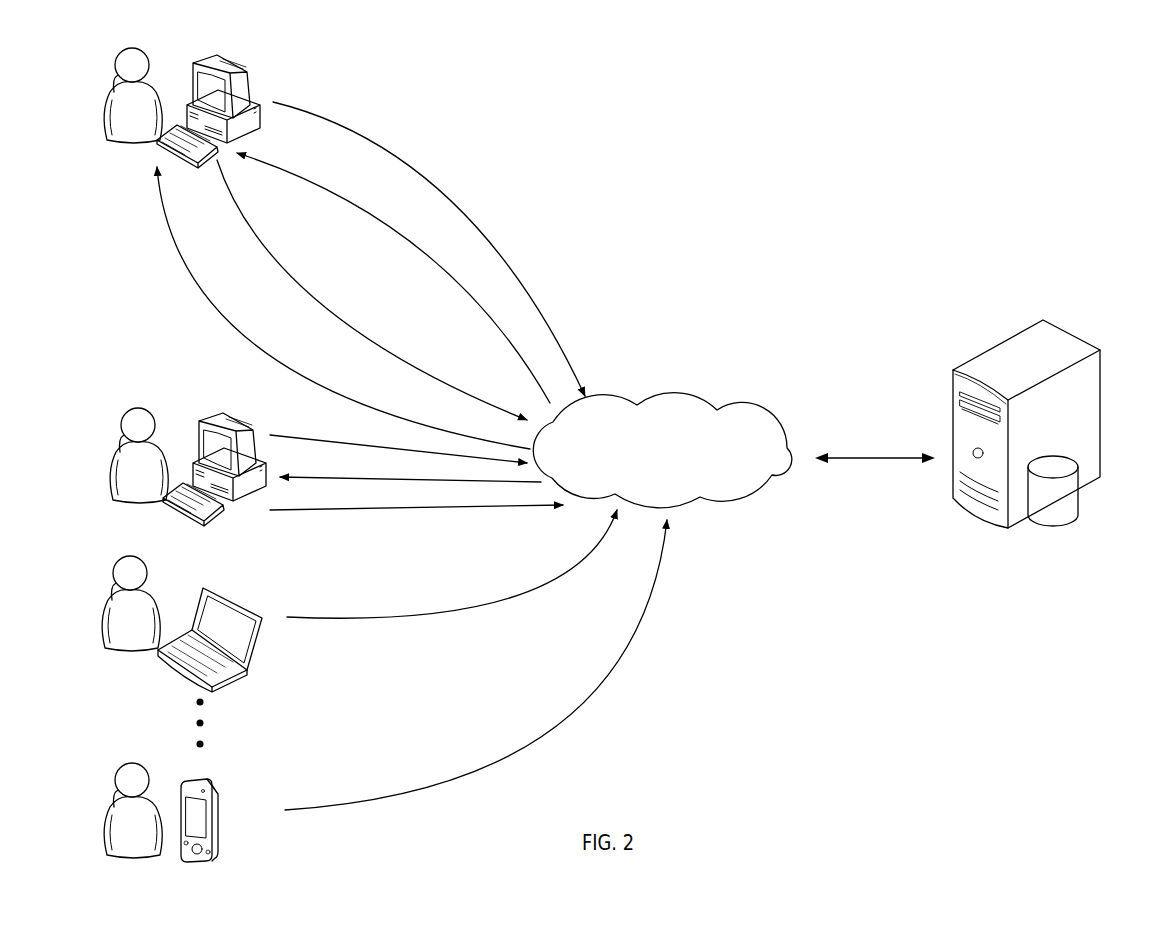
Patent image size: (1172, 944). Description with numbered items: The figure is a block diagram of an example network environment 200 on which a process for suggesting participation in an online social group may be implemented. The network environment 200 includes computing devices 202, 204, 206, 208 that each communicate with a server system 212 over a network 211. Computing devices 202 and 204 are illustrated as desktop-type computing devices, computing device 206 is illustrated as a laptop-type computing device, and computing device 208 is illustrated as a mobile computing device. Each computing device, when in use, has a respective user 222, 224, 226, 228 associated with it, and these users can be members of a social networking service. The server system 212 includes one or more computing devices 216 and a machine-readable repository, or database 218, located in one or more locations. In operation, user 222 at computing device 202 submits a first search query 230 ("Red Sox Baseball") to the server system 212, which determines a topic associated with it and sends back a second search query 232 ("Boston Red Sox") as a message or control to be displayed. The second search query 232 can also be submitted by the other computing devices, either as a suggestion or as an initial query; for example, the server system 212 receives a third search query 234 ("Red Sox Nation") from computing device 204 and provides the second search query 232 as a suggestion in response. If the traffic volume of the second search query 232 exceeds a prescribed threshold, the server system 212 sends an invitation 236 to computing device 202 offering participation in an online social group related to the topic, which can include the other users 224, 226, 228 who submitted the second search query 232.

The network environment 200 is at (887, 124).
The computing device 202 is at (245, 67).
The computing device 204 is at (214, 461).
The computing device 206 is at (229, 598).
The computing device 208 is at (204, 783).
The network 211 is at (674, 393).
The server system 212 is at (924, 546).
The computing device 216 is at (990, 356).
The database 218 is at (1073, 521).
The user 222 is at (115, 63).
The user 224 is at (121, 423).
The user 226 is at (113, 570).
The user 228 is at (115, 776).
The first search query 230 is at (425, 154).
The second search query 232 is at (361, 194).
The third search query 234 is at (337, 430).
The invitation 236 is at (240, 336).